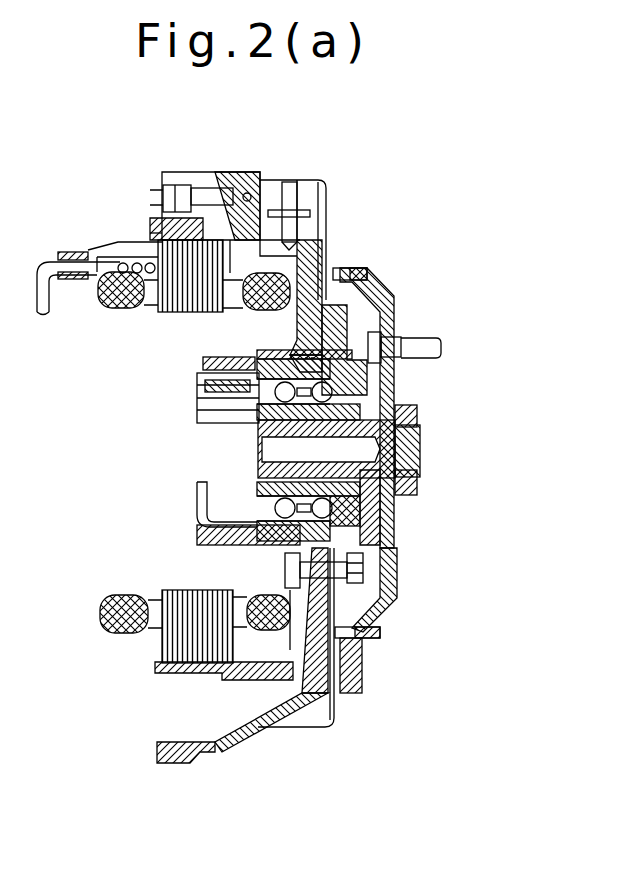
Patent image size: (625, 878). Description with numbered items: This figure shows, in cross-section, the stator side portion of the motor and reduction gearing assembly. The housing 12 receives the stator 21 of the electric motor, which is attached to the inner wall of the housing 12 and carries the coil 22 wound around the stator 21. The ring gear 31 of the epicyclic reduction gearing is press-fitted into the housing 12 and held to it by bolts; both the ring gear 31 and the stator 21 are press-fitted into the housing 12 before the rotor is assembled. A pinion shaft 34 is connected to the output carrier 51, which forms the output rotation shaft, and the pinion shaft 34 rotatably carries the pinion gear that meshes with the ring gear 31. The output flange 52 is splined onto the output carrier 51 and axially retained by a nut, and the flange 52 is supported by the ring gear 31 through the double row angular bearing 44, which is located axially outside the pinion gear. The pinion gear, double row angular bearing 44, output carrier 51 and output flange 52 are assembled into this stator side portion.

The stator 21 is at (200, 266).
The coil 22 is at (258, 364).
The pinion shaft 34 is at (338, 268).
The double row angular bearing 44 is at (388, 294).
The output carrier 51 is at (408, 348).
The output flange 52 is at (385, 494).
The ring gear 31 is at (372, 637).
The housing 12 is at (325, 692).